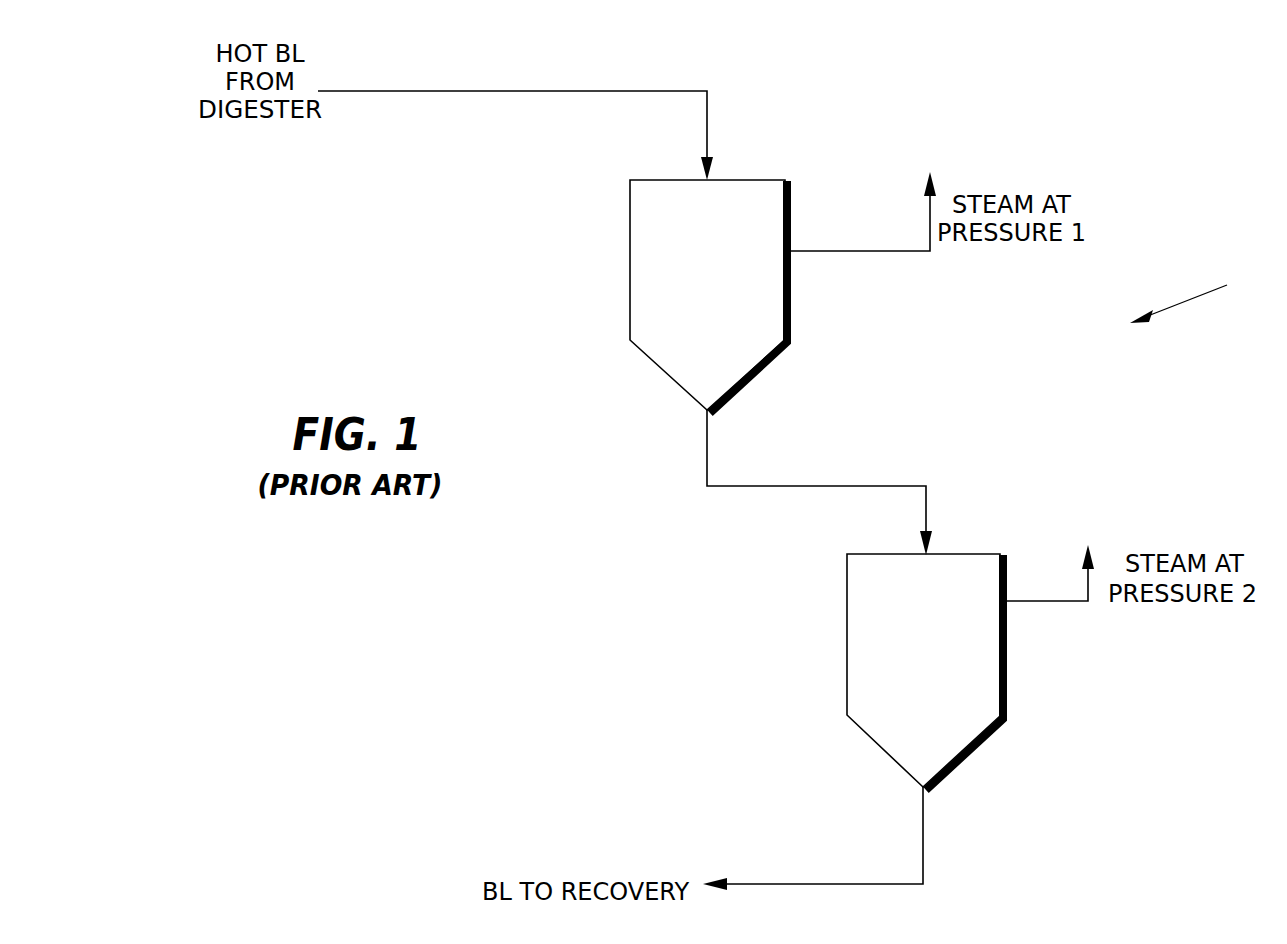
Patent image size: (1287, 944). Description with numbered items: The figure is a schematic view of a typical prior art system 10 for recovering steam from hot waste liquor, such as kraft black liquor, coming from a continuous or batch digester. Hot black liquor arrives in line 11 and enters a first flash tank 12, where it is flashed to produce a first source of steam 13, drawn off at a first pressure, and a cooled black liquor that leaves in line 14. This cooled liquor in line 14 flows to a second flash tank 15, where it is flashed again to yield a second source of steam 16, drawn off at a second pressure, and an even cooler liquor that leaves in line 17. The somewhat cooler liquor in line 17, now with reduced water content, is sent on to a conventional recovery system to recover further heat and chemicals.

The prior art system 10 is at (1198, 296).
The hot black liquor line 11 is at (420, 91).
The first flash tank 12 is at (630, 276).
The first source of steam 13 is at (805, 250).
The cooled black liquor line 14 is at (770, 486).
The second flash tank 15 is at (847, 629).
The second source of steam 16 is at (1038, 602).
The cooler liquor line 17 is at (923, 843).